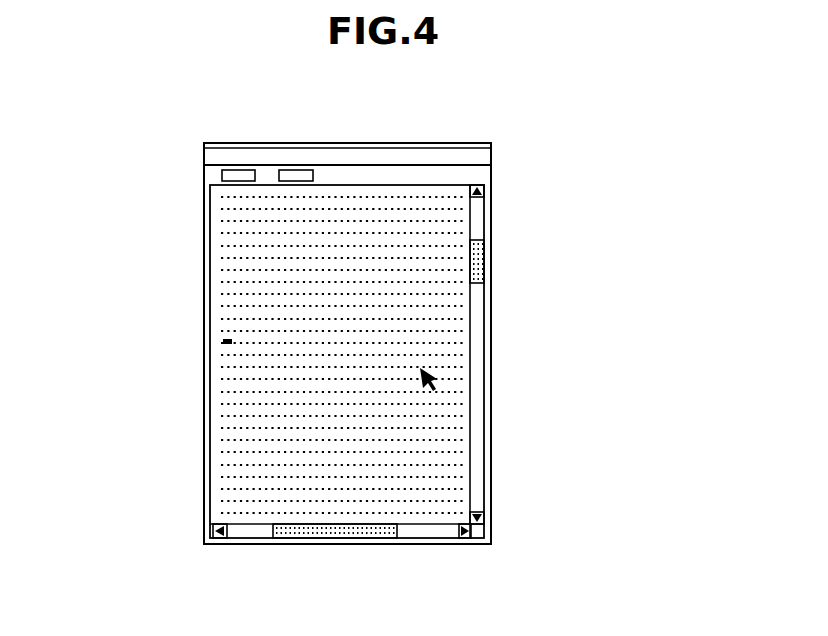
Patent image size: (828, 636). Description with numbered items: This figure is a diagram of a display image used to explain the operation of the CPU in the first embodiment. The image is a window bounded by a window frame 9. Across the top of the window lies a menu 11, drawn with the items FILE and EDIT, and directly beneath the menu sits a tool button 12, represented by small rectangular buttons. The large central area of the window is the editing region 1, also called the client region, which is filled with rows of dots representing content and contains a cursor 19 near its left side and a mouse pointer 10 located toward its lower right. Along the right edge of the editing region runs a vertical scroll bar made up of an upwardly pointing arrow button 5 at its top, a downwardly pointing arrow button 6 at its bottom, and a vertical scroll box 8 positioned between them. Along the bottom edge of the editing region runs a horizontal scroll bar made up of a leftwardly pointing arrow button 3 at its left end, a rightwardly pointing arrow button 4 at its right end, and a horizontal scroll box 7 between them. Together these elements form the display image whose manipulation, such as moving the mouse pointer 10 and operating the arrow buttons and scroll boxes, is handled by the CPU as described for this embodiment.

The editing region 1 is at (460, 326).
The leftwardly pointing arrow button 3 is at (216, 533).
The rightwardly pointing arrow button 4 is at (470, 540).
The upwardly pointing arrow button 5 is at (484, 188).
The downwardly pointing arrow button 6 is at (484, 518).
The horizontal scroll box 7 is at (355, 538).
The vertical scroll box 8 is at (484, 259).
The window frame 9 is at (205, 415).
The mouse pointer 10 is at (432, 384).
The menu 11 is at (204, 157).
The tool button 12 is at (220, 178).
The cursor 19 is at (224, 340).